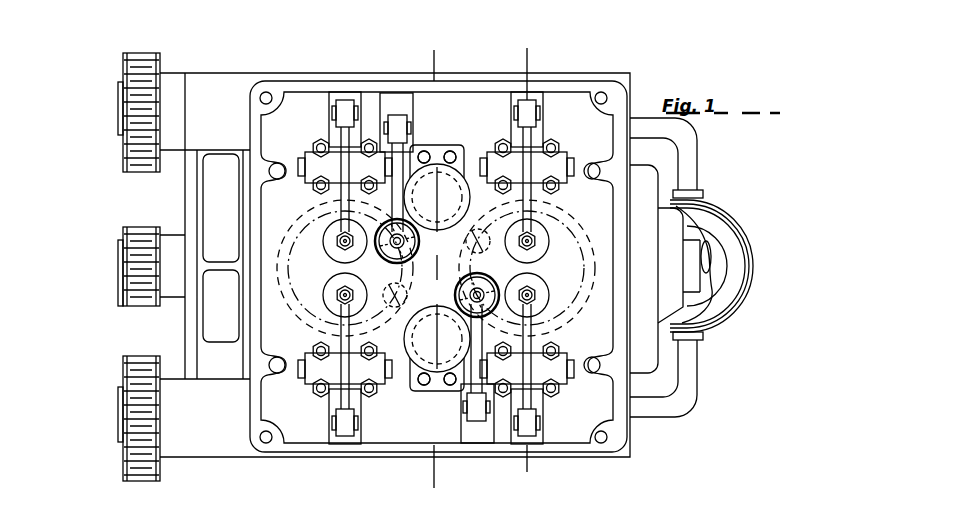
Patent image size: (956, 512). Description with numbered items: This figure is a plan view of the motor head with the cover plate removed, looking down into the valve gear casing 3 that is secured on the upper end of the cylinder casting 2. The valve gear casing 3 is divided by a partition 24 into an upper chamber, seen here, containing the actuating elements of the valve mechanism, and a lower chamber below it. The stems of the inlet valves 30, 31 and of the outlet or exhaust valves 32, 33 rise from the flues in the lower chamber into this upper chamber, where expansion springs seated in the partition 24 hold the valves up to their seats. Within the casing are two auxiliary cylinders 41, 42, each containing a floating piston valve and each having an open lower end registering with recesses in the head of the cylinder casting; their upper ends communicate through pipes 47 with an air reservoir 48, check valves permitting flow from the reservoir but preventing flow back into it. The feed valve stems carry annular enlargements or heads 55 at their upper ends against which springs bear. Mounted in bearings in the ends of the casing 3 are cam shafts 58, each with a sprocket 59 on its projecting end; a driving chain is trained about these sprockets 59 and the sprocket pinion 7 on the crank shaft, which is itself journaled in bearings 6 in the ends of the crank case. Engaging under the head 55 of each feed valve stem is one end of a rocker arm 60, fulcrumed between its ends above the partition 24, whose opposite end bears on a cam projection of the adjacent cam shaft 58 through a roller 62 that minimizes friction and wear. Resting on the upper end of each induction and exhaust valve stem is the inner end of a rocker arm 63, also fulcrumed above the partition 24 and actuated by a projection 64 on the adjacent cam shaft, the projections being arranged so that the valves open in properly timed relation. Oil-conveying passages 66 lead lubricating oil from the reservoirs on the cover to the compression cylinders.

The cylinder casting 2 is at (537, 267).
The valve gear casing 3 is at (640, 316).
The bearings 6 is at (434, 269).
The sprocket pinion 7 is at (123, 273).
The partition 24 is at (600, 275).
The inlet valve 30 is at (540, 241).
The inlet valve 31 is at (323, 247).
The outlet or exhaust valve 32 is at (549, 290).
The outlet or exhaust valve 33 is at (323, 295).
The auxiliary cylinder 41 is at (437, 188).
The auxiliary cylinder 42 is at (437, 347).
The pipes 47 is at (688, 155).
The air reservoir 48 is at (738, 262).
The annular enlargements or heads 55 is at (419, 241).
The cam shaft 58 is at (118, 108).
The sprocket 59 is at (123, 158).
The rocker arm 60 is at (406, 147).
The roller 62 is at (400, 123).
The rocker arm 63 is at (340, 190).
The projection 64 is at (328, 122).
The oil-conveying passages 66 is at (450, 157).